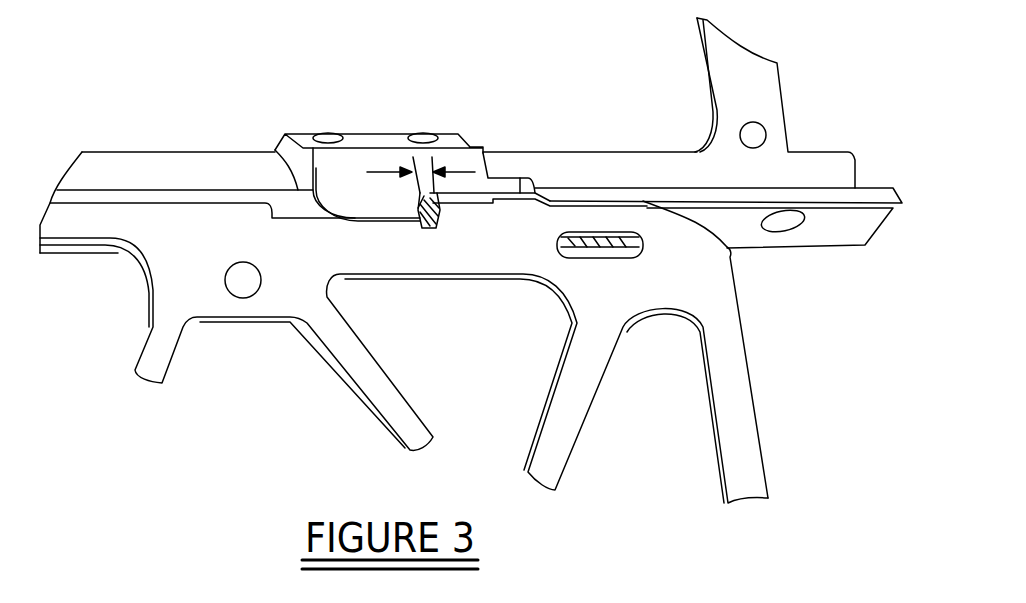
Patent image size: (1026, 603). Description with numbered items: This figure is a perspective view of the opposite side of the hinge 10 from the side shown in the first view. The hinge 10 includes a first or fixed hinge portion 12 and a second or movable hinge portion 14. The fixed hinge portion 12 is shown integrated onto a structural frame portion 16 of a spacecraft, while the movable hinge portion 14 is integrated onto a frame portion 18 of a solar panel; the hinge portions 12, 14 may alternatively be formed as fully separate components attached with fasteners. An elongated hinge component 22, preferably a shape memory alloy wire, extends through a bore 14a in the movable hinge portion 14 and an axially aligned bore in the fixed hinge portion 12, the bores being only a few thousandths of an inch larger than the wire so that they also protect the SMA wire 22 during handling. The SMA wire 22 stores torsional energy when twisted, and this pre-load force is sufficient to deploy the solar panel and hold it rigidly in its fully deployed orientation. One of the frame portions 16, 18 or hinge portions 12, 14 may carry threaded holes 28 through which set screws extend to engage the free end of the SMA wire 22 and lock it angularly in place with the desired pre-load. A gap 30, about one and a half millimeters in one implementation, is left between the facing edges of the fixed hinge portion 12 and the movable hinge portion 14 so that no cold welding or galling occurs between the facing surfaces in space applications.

The hinge 10 is at (483, 103).
The fixed hinge portion 12 is at (335, 178).
The movable hinge portion 14 is at (510, 223).
The bore 14a is at (430, 224).
The structural frame portion 16 is at (115, 170).
The frame portion 18 is at (163, 242).
The elongated hinge component 22 is at (425, 215).
The threaded holes 28 is at (573, 252).
The gap 30 is at (390, 170).